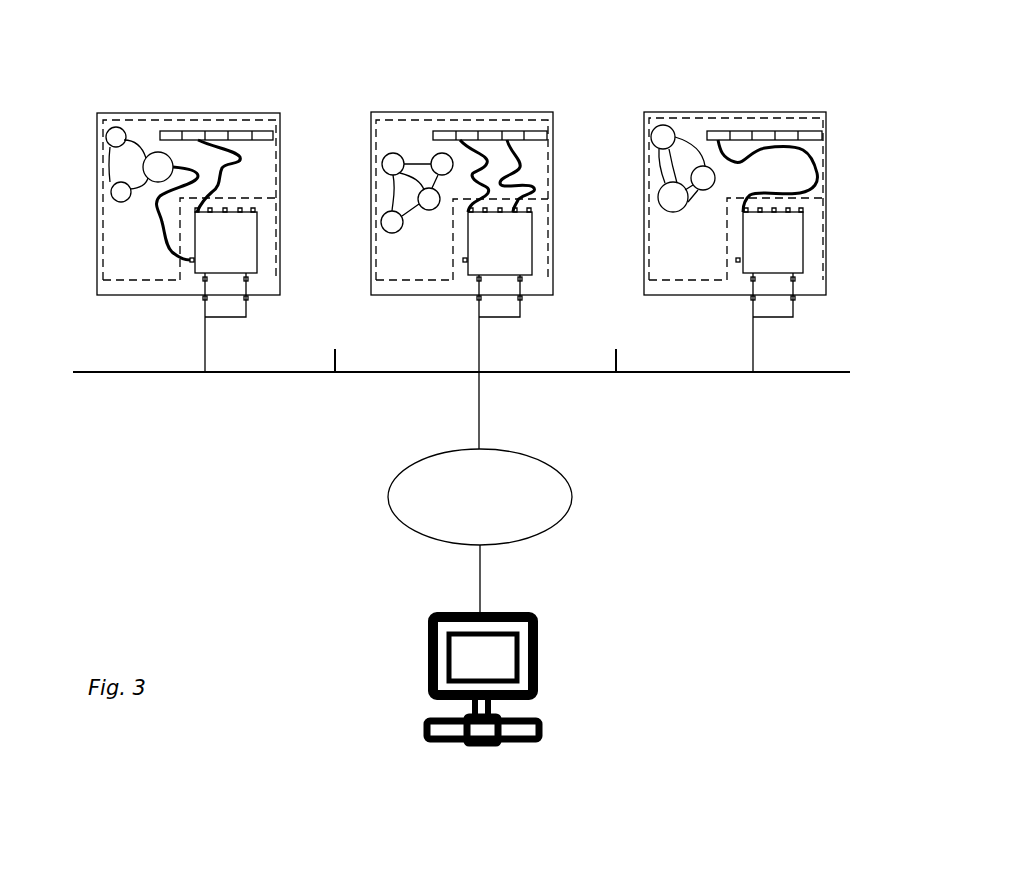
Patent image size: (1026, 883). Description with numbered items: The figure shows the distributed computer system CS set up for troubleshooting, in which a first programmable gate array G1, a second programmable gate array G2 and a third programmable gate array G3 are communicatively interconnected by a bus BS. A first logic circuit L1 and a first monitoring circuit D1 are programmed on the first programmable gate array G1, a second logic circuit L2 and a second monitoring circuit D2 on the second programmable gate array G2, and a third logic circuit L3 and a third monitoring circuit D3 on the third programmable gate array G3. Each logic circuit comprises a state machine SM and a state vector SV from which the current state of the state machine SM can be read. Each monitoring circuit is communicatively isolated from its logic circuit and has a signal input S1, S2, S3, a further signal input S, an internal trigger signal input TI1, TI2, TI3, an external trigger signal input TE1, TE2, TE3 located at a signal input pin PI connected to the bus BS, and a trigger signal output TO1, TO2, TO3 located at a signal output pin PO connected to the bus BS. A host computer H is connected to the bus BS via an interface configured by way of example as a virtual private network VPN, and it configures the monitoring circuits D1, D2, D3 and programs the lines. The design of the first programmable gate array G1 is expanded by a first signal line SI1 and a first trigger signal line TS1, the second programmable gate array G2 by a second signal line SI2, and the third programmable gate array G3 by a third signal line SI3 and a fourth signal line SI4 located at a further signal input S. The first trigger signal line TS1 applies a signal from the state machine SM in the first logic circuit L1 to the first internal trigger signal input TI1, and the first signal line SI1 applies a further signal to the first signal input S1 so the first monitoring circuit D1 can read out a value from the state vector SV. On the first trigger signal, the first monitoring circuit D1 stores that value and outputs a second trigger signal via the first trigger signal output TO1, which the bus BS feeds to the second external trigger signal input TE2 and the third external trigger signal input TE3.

The computer system CS is at (124, 34).
The first programmable gate array G1 is at (212, 112).
The second programmable gate array G2 is at (715, 112).
The third programmable gate array G3 is at (467, 112).
The first logic circuit L1 is at (138, 282).
The second logic circuit L2 is at (703, 282).
The third logic circuit L3 is at (418, 282).
The first monitoring circuit D1 is at (258, 250).
The second monitoring circuit D2 is at (803, 243).
The third monitoring circuit D3 is at (532, 250).
The first signal input S1 is at (205, 214).
The second signal input S2 is at (745, 214).
The third signal input S3 is at (473, 214).
The state vector SV is at (227, 131).
The state machine SM is at (112, 158).
The first signal line SI1 is at (243, 157).
The second signal line SI2 is at (813, 157).
The third signal line SI3 is at (462, 147).
The fourth signal line SI4 is at (527, 160).
The first trigger signal line TS1 is at (128, 224).
The further signal input S is at (270, 203).
The first internal trigger signal input TI1 is at (192, 262).
The second internal trigger signal input TI2 is at (738, 262).
The third internal trigger signal input TI3 is at (465, 263).
The first external trigger signal input TE1 is at (203, 298).
The second external trigger signal input TE2 is at (755, 282).
The third external trigger signal input TE3 is at (481, 282).
The first trigger signal output TO1 is at (249, 281).
The second trigger signal output TO2 is at (795, 280).
The third trigger signal output TO3 is at (519, 281).
The signal input pin PI is at (208, 300).
The signal output pin PO is at (248, 300).
The bus BS is at (256, 374).
The virtual private network VPN is at (480, 530).
The host computer H is at (428, 668).